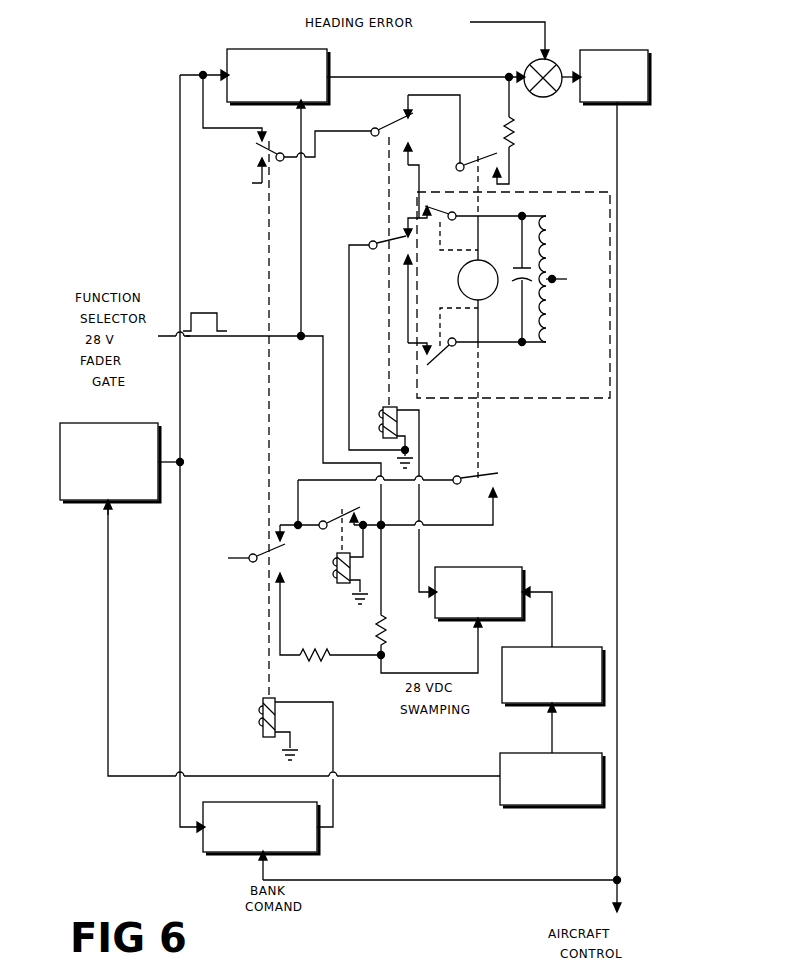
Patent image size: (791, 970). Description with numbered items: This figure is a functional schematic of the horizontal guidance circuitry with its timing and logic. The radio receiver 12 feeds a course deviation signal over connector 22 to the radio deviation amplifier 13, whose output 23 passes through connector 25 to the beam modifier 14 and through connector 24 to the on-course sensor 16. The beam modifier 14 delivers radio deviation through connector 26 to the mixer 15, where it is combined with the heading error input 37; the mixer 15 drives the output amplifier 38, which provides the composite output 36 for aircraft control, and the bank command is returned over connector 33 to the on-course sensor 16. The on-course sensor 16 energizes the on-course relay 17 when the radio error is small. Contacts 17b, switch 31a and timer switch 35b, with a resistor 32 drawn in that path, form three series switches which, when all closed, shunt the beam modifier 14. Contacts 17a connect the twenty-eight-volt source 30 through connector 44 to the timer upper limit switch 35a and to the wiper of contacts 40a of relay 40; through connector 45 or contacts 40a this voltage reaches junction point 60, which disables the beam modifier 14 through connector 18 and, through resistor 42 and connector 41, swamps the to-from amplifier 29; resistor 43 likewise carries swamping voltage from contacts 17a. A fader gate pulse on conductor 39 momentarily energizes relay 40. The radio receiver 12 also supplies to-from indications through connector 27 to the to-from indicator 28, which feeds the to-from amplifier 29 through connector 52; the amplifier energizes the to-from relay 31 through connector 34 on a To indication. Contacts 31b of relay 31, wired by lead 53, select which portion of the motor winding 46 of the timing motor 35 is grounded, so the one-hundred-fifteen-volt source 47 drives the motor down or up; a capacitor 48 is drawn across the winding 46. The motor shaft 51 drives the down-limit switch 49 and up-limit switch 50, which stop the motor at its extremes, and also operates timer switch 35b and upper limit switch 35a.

The radio receiver 12 is at (548, 805).
The radio deviation amplifier 13 is at (100, 423).
The beam modifier 14 is at (244, 49).
The mixer 15 is at (552, 60).
The on-course sensor 16 is at (256, 802).
The on-course relay 17 is at (262, 716).
The second set of contacts 17a is at (264, 544).
The first set of contacts 17b is at (254, 146).
The connector 18 is at (301, 200).
The connector 22 is at (108, 625).
The radio amplifier output 23 is at (165, 470).
The connector 24 is at (180, 615).
The connector 25 is at (180, 378).
The connector 26 is at (412, 72).
The connector 27 is at (552, 731).
The to-from indicator 28 is at (562, 706).
The to-from amplifier 29 is at (472, 567).
The source of 28 volts D.C. 30 is at (252, 564).
The to-from relay 31 is at (382, 418).
The switch 31a is at (413, 122).
The contacts 31b is at (373, 242).
The resistor 32 is at (517, 132).
The connector 33 is at (617, 116).
The connector 34 is at (418, 558).
The timing motor 35 is at (535, 398).
The timer upper limit switch 35a is at (500, 476).
The timer switch 35b is at (522, 162).
The composite output signal 36 is at (612, 907).
The heading error input line 37 is at (526, 21).
The output amplifier 38 is at (610, 50).
The connector 39 is at (203, 338).
The relay 40 is at (338, 584).
The contacts 40a is at (330, 516).
The connector 41 is at (420, 672).
The resistor 42 is at (386, 630).
The resistor 43 is at (310, 655).
The connector 44 is at (298, 486).
The connector 45 is at (431, 524).
The motor winding 46 is at (552, 240).
The 115-volt source 47 is at (564, 272).
The capacitor 48 is at (522, 266).
The down-limit switch 49 is at (450, 224).
The up-limit switch 50 is at (449, 340).
The motor shaft 51 is at (488, 296).
The connector 52 is at (556, 610).
The connection line 53 is at (349, 320).
The junction point 60 is at (382, 524).